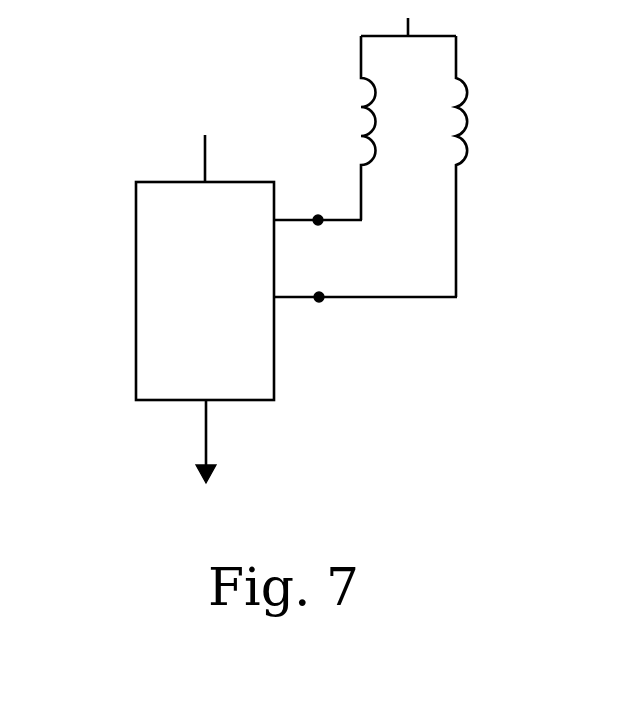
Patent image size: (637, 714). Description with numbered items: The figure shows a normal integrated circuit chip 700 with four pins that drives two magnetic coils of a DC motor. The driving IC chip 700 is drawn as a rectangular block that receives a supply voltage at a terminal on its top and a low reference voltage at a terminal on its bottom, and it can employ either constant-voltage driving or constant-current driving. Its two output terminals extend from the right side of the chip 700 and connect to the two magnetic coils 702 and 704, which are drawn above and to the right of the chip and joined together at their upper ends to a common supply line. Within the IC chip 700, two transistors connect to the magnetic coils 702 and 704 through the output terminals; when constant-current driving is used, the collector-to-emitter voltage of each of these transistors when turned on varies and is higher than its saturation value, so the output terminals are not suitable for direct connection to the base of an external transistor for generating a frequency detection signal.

The integrated circuit chip 700 is at (136, 296).
The magnetic coil 702 is at (352, 121).
The magnetic coil 704 is at (478, 108).